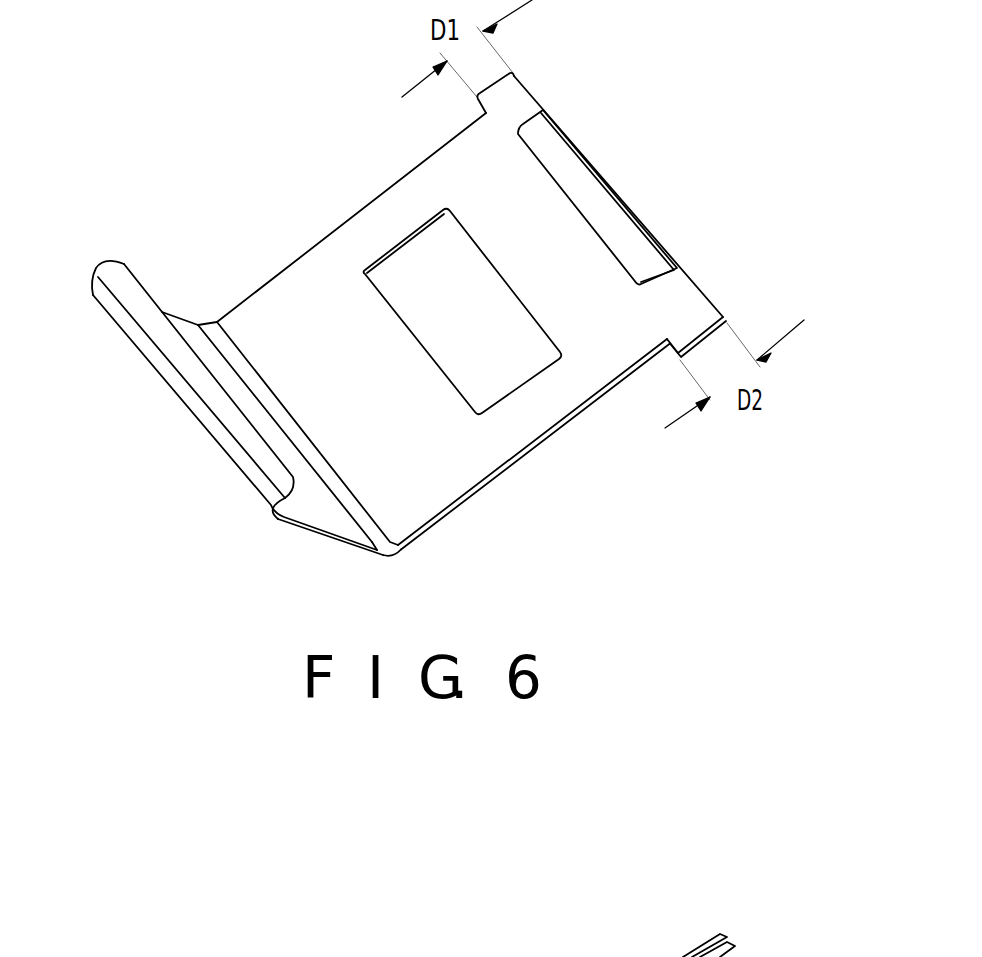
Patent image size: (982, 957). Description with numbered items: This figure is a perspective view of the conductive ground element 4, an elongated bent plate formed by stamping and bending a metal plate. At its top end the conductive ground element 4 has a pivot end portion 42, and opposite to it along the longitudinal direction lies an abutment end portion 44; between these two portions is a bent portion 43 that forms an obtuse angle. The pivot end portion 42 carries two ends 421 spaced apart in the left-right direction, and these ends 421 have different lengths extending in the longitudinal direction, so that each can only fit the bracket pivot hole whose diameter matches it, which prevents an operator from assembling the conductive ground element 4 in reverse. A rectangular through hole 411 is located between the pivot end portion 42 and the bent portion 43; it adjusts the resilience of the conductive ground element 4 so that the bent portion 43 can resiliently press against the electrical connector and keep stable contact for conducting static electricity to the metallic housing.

The conductive ground element 4 is at (347, 121).
The pivot end portion 42 is at (690, 296).
The ends 421 is at (509, 85).
The rectangular through hole 411 is at (507, 383).
The bent portion 43 is at (382, 554).
The abutment end portion 44 is at (113, 303).